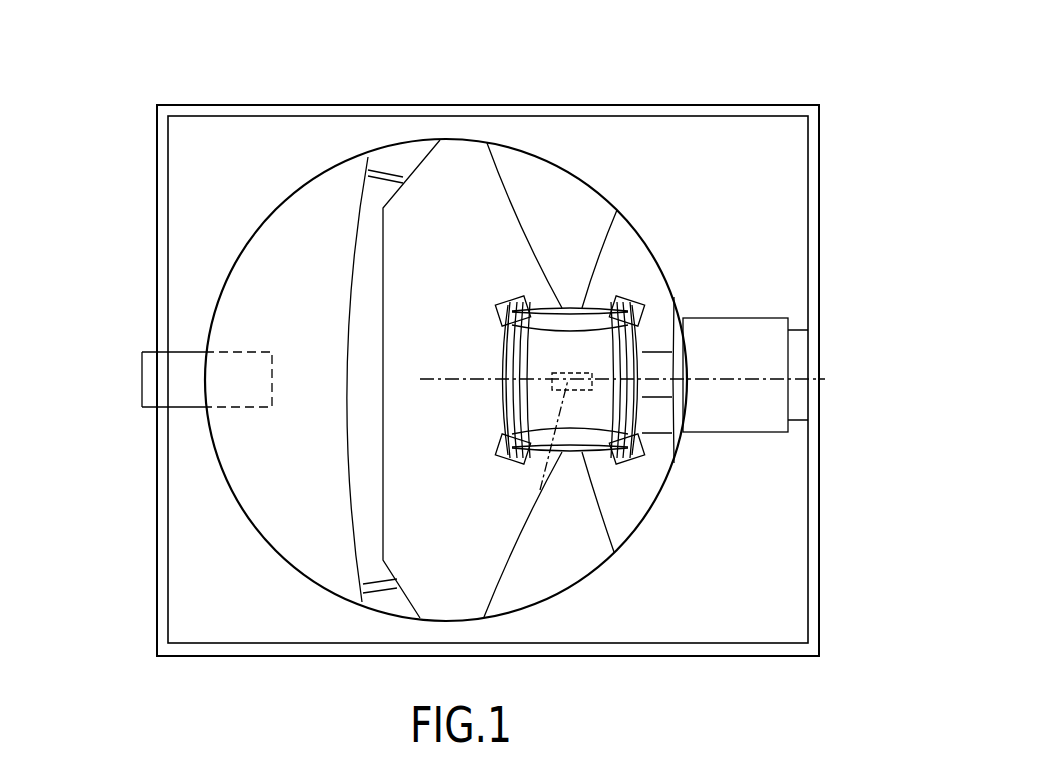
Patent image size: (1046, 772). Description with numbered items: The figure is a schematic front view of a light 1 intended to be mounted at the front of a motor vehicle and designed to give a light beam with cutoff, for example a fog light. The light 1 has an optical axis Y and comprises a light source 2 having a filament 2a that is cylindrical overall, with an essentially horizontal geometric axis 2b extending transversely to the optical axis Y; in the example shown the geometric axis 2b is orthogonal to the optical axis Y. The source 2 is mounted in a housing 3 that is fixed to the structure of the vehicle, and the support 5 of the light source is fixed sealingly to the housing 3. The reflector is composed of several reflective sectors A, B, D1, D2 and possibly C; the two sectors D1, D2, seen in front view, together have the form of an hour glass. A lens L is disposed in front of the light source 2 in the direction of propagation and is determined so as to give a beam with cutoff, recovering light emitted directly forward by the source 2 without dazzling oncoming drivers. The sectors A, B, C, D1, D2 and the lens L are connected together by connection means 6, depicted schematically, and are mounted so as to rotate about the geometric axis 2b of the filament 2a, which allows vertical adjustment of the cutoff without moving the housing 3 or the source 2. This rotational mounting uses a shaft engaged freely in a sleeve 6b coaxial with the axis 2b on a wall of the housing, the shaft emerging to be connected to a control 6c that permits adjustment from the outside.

The light 1 is at (176, 103).
The light source 2 is at (603, 372).
The filament 2a is at (598, 400).
The geometric axis 2b is at (540, 377).
The housing 3 is at (157, 196).
The support 5 is at (753, 412).
The connection means 6 is at (388, 152).
The sleeve 6b is at (183, 393).
The control 6c is at (145, 378).
The reflective sector A is at (450, 286).
The reflective sector B is at (634, 287).
The reflective sector C is at (300, 286).
The reflective sector D1 is at (584, 233).
The reflective sector D2 is at (590, 558).
The lens L is at (503, 414).
The optical axis Y is at (541, 485).